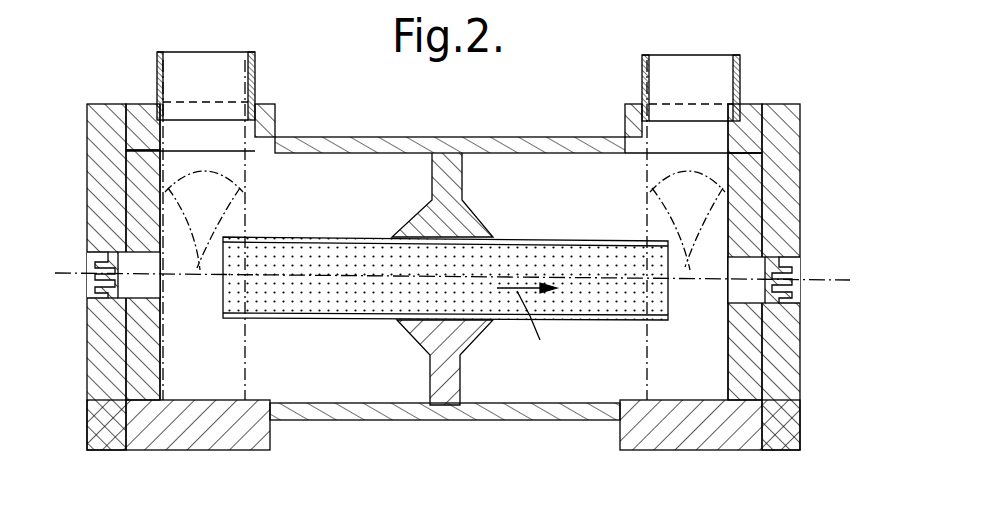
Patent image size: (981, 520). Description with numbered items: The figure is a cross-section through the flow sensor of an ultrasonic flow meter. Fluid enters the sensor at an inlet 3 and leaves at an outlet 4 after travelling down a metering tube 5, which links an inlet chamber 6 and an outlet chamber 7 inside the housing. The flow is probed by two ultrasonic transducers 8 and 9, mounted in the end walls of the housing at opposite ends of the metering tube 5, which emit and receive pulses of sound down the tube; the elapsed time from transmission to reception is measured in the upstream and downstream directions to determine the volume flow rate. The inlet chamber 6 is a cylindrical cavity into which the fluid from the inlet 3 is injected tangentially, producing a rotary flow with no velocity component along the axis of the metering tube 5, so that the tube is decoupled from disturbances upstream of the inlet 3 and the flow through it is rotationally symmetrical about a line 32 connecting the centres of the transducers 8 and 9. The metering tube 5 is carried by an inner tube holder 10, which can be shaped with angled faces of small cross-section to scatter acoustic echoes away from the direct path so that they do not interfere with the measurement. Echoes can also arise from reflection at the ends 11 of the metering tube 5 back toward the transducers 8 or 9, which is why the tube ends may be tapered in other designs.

The inlet 3 is at (232, 75).
The outlet 4 is at (660, 73).
The metering tube 5 is at (542, 258).
The inlet chamber 6 is at (180, 379).
The outlet chamber 7 is at (705, 380).
The ultrasonic transducer 8 is at (122, 296).
The ultrasonic transducer 9 is at (765, 308).
The inner tube holder 10 is at (415, 212).
The metering tube ends 11 is at (223, 259).
The line connecting centres of the transducers 32 is at (836, 280).